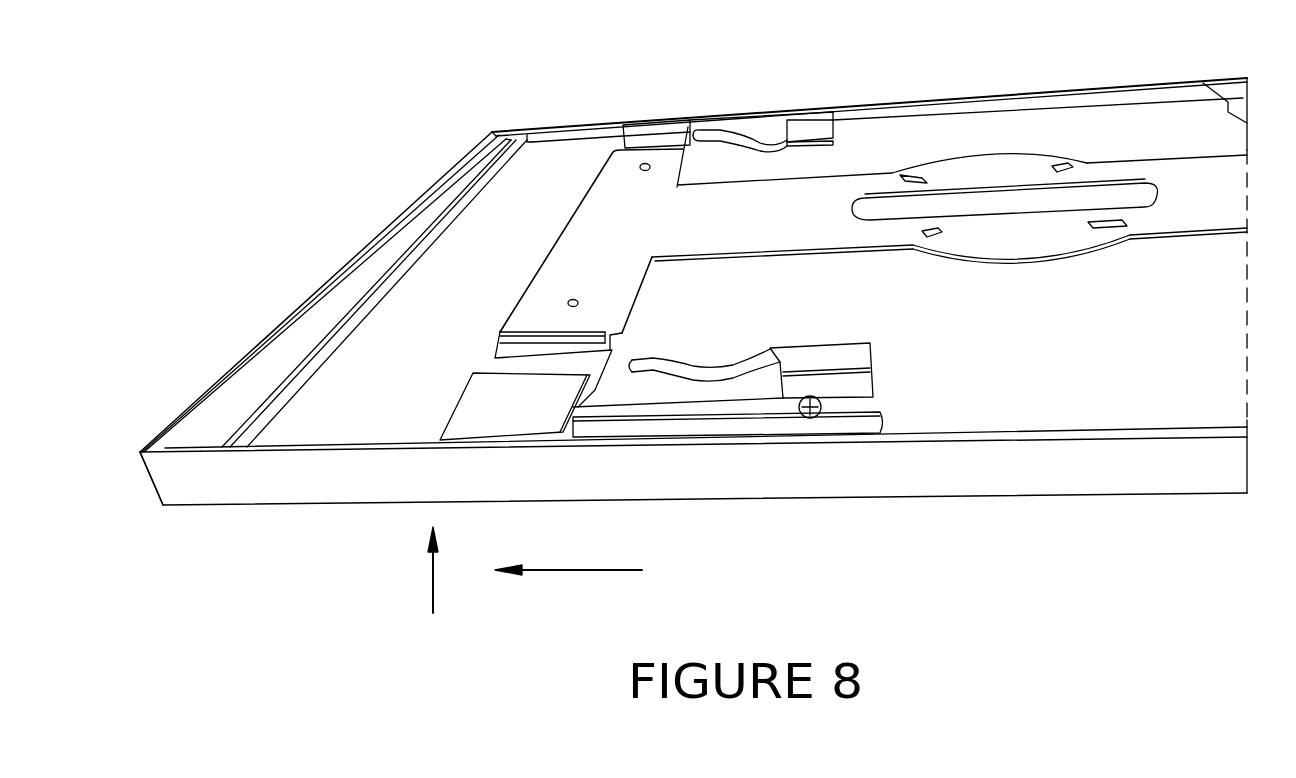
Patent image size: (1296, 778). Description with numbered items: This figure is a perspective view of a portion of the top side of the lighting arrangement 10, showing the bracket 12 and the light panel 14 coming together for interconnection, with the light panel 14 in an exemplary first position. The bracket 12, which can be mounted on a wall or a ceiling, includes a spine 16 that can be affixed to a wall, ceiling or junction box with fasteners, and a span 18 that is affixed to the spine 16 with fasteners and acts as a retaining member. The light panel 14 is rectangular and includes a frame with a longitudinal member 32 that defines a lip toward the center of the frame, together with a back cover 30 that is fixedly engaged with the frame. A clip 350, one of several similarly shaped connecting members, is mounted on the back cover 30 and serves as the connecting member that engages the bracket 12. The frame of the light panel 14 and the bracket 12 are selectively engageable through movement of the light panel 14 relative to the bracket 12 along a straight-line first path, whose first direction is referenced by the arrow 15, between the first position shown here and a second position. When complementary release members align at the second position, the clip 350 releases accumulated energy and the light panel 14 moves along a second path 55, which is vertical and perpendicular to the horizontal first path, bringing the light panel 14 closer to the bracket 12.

The lighting arrangement 10 is at (355, 137).
The bracket 12 is at (593, 83).
The light panel 14 is at (445, 122).
The arrow indicating first direction of movement 15 is at (575, 573).
The spine 16 is at (1072, 232).
The span 18 is at (552, 250).
The back cover 30 is at (1094, 346).
The longitudinal member 32 is at (997, 468).
The second path of movement 55 is at (432, 578).
The clip 350 is at (890, 380).